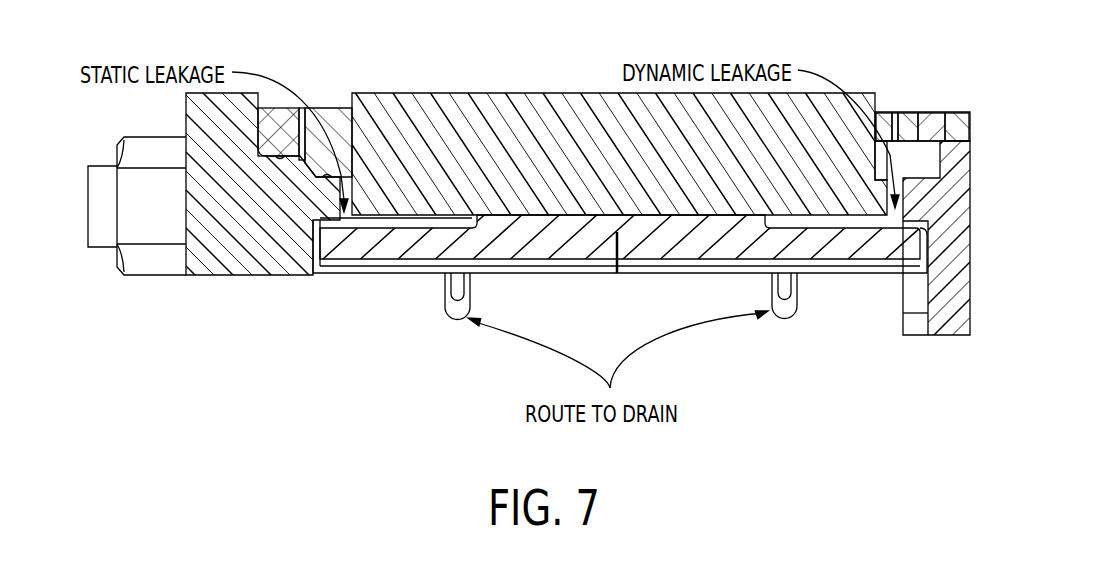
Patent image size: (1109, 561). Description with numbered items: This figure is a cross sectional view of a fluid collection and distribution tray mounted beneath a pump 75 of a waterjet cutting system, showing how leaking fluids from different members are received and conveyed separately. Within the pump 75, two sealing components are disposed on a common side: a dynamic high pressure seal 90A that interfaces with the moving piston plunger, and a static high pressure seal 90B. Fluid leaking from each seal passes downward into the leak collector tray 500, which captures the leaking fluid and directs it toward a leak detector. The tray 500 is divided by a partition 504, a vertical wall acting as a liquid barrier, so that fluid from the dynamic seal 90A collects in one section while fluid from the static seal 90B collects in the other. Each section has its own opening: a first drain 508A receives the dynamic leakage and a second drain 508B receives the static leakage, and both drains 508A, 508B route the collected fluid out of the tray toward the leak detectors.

The pump 75 is at (217, 260).
The dynamic high pressure seal 90A is at (928, 130).
The static high pressure seal 90B is at (328, 124).
The leak collector tray 500 is at (352, 288).
The partition 504 is at (605, 222).
The first drain 508A is at (778, 317).
The second drain 508B is at (453, 308).